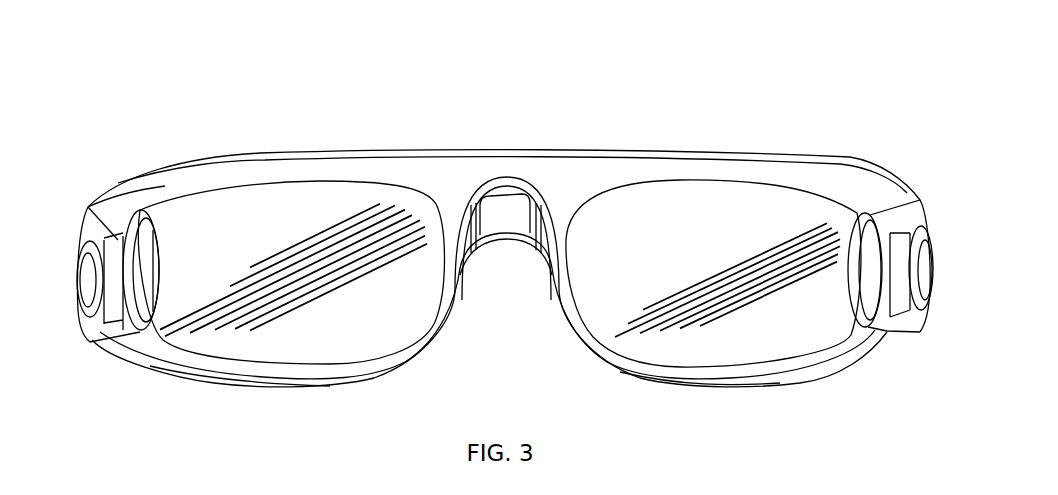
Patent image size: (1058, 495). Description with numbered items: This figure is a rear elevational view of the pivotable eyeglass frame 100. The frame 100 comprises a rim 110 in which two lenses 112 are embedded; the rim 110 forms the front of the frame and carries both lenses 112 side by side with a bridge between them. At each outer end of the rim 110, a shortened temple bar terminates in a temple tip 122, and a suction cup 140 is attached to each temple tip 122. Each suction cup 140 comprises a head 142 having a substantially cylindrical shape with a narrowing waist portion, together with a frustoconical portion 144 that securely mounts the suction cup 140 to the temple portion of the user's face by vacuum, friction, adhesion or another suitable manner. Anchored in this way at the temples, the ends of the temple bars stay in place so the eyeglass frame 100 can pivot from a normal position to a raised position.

The pivotable eyeglass frame 100 is at (499, 238).
The rim 110 is at (428, 168).
The lenses 112 is at (223, 343).
The temple tip 122 is at (115, 300).
The suction cup 140 is at (140, 213).
The head 142 is at (87, 247).
The frustoconical portion 144 is at (158, 272).